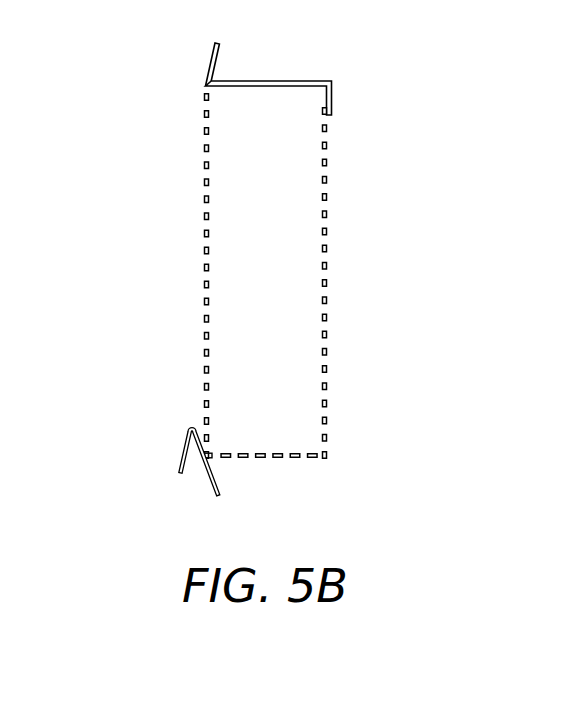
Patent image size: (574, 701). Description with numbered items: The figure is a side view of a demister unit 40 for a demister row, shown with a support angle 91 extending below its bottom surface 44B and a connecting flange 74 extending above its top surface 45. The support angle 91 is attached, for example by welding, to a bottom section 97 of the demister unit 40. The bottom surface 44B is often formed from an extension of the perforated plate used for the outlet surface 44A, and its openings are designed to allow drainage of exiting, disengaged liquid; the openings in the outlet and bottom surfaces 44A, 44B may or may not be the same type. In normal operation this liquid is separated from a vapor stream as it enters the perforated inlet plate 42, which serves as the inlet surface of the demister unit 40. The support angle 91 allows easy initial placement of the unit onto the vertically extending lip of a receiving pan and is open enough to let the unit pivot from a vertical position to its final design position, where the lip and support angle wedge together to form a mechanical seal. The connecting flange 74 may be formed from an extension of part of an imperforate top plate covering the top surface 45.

The demister unit 40 is at (148, 95).
The perforated inlet plate 42 is at (204, 249).
The outlet surface 44A is at (327, 247).
The bottom surface 44B is at (278, 463).
The top surface 45 is at (298, 80).
The connecting flange 74 is at (219, 55).
The support angle 91 is at (183, 449).
The bottom section 97 is at (207, 453).